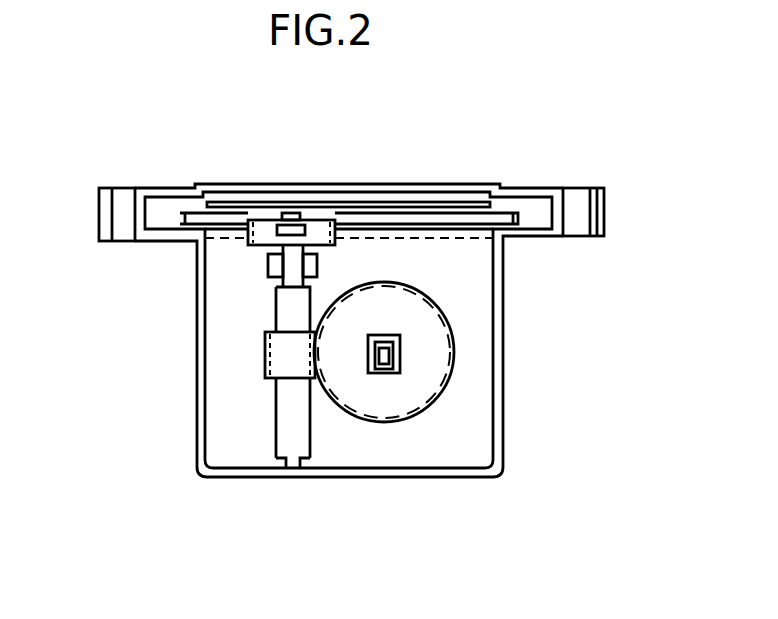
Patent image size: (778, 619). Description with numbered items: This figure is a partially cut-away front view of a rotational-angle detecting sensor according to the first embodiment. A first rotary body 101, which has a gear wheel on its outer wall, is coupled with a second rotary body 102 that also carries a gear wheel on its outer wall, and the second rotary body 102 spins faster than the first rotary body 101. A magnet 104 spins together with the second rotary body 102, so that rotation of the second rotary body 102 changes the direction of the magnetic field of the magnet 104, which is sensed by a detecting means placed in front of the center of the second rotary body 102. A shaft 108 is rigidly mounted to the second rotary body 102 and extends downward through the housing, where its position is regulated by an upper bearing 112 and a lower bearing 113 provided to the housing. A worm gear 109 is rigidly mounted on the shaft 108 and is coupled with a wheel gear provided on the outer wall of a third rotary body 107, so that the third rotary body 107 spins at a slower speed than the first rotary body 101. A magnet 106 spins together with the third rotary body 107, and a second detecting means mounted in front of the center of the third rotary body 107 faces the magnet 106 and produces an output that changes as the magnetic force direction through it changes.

The first rotary body 101 is at (417, 213).
The second rotary body 102 is at (257, 213).
The magnet 104 is at (303, 213).
The magnet 106 is at (390, 355).
The third rotary body 107 is at (433, 382).
The shaft 108 is at (283, 403).
The worm gear 109 is at (265, 353).
The bearing 112 is at (272, 270).
The bearing 113 is at (283, 462).